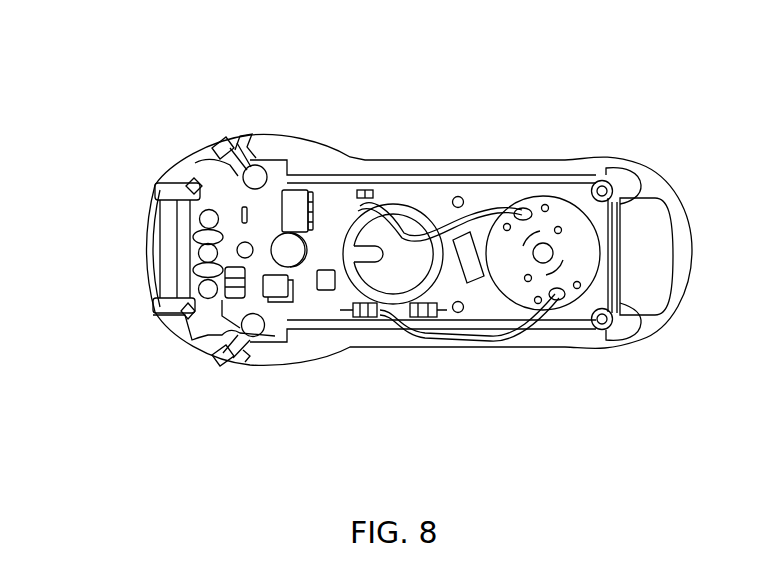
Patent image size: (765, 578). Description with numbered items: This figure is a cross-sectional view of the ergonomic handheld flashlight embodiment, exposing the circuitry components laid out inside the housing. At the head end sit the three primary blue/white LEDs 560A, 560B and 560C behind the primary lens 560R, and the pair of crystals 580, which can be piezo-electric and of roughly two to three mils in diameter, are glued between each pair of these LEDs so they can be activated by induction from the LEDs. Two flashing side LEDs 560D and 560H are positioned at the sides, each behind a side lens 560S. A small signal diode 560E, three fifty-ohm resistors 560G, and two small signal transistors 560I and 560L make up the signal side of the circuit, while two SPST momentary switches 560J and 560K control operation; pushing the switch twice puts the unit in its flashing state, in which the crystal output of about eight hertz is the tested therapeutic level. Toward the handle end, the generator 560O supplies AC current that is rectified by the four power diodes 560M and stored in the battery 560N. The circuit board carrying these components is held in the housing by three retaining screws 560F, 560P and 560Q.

The primary blue/white LED 560A is at (188, 185).
The pair of crystals 580 is at (156, 196).
The primary blue/white LED 560B is at (198, 248).
The primary lens 560R is at (163, 275).
The primary blue/white LED 560C is at (230, 276).
The 50 Ohm resistor 560G is at (212, 297).
The side lens 560S is at (207, 347).
The flashing side LED 560H is at (253, 338).
The small signal transistor 560I is at (279, 297).
The small signal diode 560E is at (233, 145).
The flashing side LED 560D is at (257, 166).
The circuit board retaining screw 560F is at (242, 243).
The SPST momentary switch 560J is at (287, 248).
The SPST momentary switch 560K is at (305, 237).
The small signal transistor 560L is at (326, 290).
The power diode 560M is at (425, 316).
The battery 560N is at (405, 228).
The circuit board retaining screw 560P is at (458, 197).
The circuit board retaining screw 560Q is at (460, 312).
The generator 560O is at (575, 238).